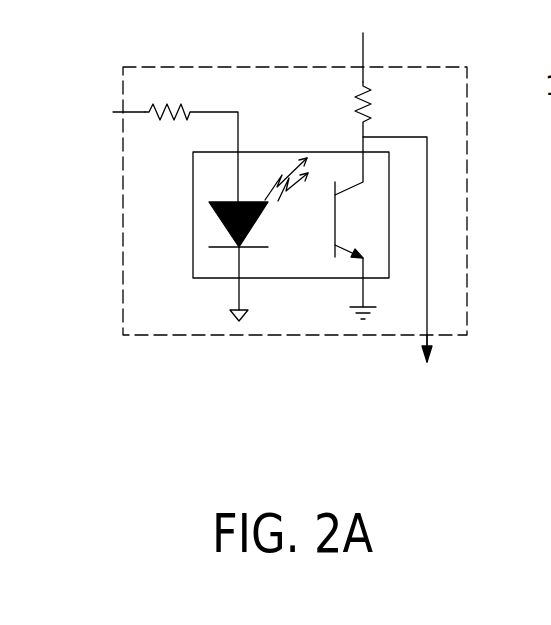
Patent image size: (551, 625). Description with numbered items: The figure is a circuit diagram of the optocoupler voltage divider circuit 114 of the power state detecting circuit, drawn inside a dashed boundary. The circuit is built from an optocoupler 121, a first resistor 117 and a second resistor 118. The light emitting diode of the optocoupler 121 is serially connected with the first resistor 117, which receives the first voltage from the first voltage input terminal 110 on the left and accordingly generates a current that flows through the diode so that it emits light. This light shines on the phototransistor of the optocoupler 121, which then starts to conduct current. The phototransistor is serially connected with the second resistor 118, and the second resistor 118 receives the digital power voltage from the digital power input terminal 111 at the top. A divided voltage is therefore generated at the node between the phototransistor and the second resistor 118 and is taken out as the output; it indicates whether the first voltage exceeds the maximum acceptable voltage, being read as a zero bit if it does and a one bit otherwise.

The first voltage input terminal 110 is at (121, 111).
The digital power input terminal 111 is at (363, 57).
The optocoupler voltage divider circuit 114 is at (198, 67).
The first resistor 117 is at (157, 116).
The second resistor 118 is at (372, 118).
The optocoupler 121 is at (320, 152).